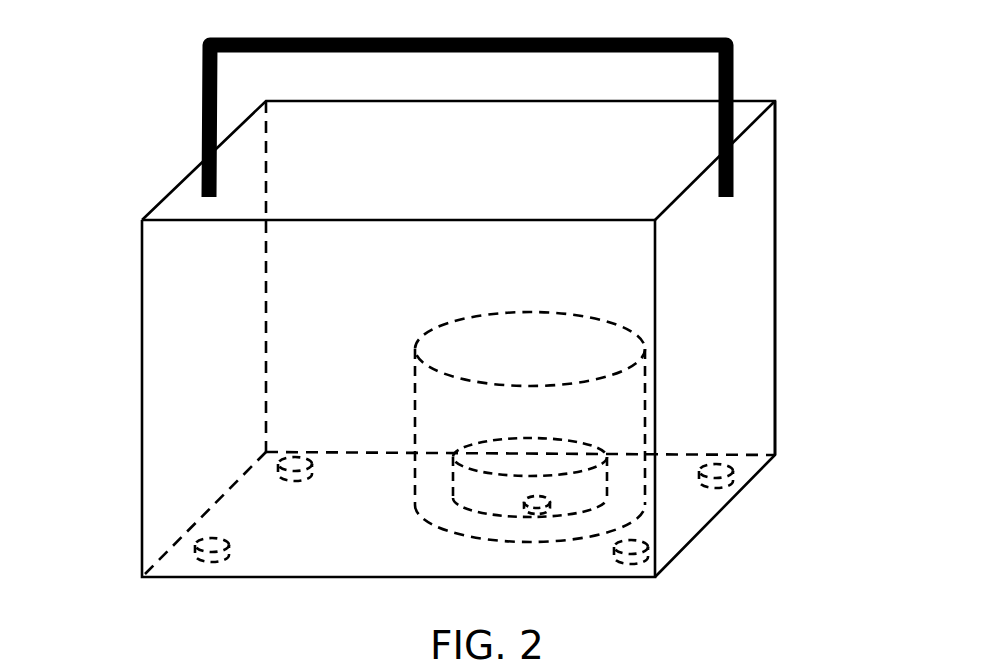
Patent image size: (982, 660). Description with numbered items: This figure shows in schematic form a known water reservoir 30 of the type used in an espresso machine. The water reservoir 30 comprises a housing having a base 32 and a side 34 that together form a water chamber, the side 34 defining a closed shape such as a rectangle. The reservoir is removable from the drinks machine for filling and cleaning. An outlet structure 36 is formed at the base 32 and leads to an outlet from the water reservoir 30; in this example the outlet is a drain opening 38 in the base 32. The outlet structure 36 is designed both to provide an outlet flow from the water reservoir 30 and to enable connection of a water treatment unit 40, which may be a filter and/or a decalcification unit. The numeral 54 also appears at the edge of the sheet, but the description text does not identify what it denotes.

The water reservoir 30 is at (829, 131).
The base 32 is at (265, 545).
The side 34 is at (776, 325).
The outlet structure 36 is at (455, 488).
The drain opening 38 is at (552, 502).
The water treatment unit 40 is at (517, 320).
The element 54 is at (714, 655).